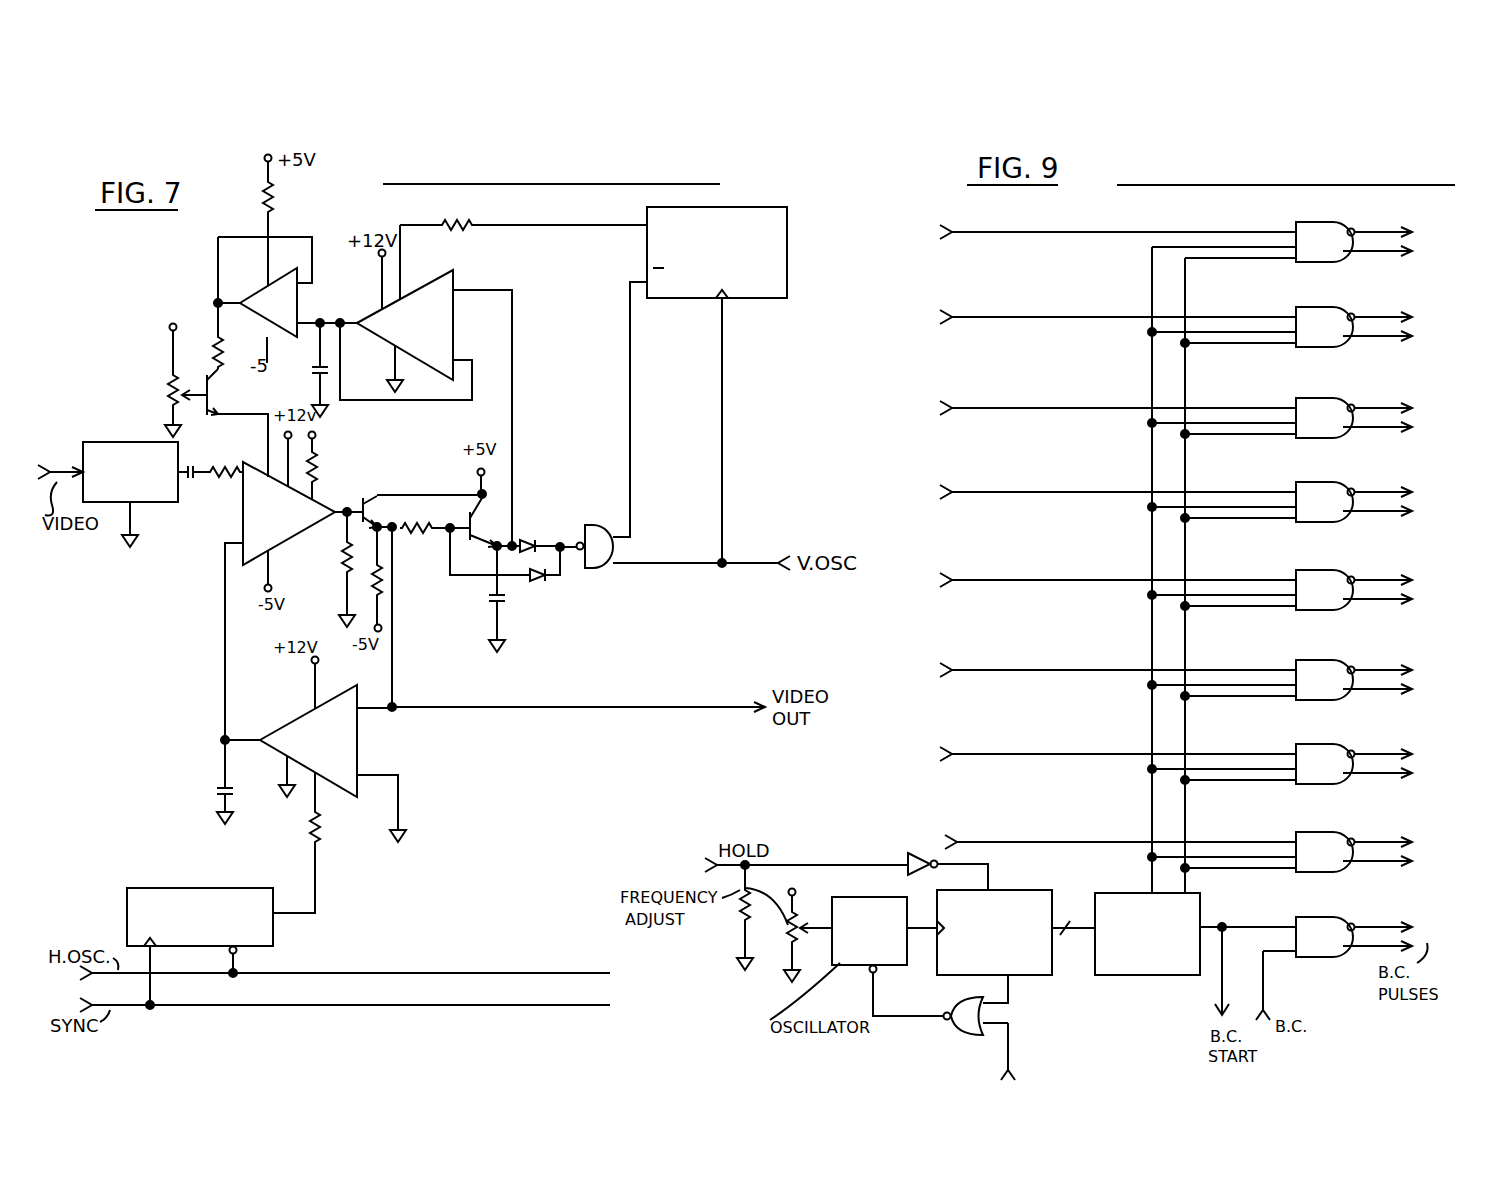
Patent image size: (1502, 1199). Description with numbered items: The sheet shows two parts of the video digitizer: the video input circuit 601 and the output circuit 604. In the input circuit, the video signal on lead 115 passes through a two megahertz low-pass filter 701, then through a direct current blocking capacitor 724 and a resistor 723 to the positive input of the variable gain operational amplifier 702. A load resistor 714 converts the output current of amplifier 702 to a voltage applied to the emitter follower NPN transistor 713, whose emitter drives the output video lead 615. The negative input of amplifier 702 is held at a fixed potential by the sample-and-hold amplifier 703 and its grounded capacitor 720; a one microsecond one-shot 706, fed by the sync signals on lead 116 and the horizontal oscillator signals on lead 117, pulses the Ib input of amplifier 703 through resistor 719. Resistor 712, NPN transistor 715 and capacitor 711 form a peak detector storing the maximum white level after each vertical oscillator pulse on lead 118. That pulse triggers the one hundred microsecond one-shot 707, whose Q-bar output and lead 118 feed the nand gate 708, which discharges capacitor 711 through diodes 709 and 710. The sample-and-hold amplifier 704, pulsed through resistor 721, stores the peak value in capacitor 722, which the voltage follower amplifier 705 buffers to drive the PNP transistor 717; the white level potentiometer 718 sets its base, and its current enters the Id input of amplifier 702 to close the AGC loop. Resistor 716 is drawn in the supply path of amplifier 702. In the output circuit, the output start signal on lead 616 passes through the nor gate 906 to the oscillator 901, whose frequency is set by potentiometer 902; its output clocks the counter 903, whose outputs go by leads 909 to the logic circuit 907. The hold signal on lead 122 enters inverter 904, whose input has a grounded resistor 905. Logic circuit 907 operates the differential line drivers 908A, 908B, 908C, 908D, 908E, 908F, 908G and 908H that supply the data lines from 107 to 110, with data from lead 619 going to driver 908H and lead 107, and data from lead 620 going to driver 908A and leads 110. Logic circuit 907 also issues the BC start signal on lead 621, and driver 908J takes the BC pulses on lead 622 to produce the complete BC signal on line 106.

In FIG. 7, the video input circuit 601 is at (551, 170).
In FIG. 9, the output circuit 604 is at (1287, 171).
In FIG. 7, the low-pass filter 701 is at (125, 442).
In FIG. 7, the operational amplifier 702 is at (260, 513).
In FIG. 7, the operational transconductance amplifier 703 is at (302, 722).
In FIG. 7, the operational amplifier 704 is at (455, 290).
In FIG. 7, the operational amplifier 705 is at (298, 306).
In FIG. 7, the one-shot 706 is at (148, 897).
In FIG. 7, the one-shot 707 is at (748, 225).
In FIG. 7, the nand gate 708 is at (613, 514).
In FIG. 7, the diode 709 is at (540, 582).
In FIG. 7, the diode 710 is at (526, 540).
In FIG. 7, the capacitor 711 is at (490, 602).
In FIG. 7, the resistor 712 is at (427, 540).
In FIG. 7, the NPN transistor 713 is at (362, 500).
In FIG. 7, the resistor 714 is at (340, 576).
In FIG. 7, the NPN transistor 715 is at (478, 522).
In FIG. 7, the resistor 716 is at (316, 466).
In FIG. 7, the PNP transistor 717 is at (205, 388).
In FIG. 7, the potentiometer 718 is at (165, 390).
In FIG. 7, the resistor 719 is at (318, 836).
In FIG. 7, the capacitor 720 is at (218, 797).
In FIG. 7, the resistor 721 is at (455, 223).
In FIG. 7, the capacitor 722 is at (312, 367).
In FIG. 7, the resistor 723 is at (228, 470).
In FIG. 7, the direct current blocking capacitor 724 is at (190, 480).
In FIG. 7, the lead 115 is at (60, 470).
In FIG. 7, the lead 116 is at (490, 1006).
In FIG. 7, the lead 117 is at (440, 973).
In FIG. 7, the lead 118 is at (722, 566).
In FIG. 7, the lead 615 is at (655, 710).
In FIG. 9, the oscillator 901 is at (855, 965).
In FIG. 9, the potentiometer 902 is at (787, 940).
In FIG. 9, the counter 903 is at (1000, 905).
In FIG. 9, the inverter 904 is at (922, 853).
In FIG. 9, the resistor 905 is at (740, 930).
In FIG. 9, the nor gate 906 is at (980, 1035).
In FIG. 9, the logic circuit 907 is at (1170, 973).
In FIG. 9, the differential line driver 908A is at (1306, 240).
In FIG. 9, the differential line driver 908B is at (1306, 325).
In FIG. 9, the differential line driver 908C is at (1306, 416).
In FIG. 9, the differential line driver 908D is at (1306, 500).
In FIG. 9, the differential line driver 908E is at (1306, 588).
In FIG. 9, the differential line driver 908F is at (1306, 678).
In FIG. 9, the differential line driver 908G is at (1306, 762).
In FIG. 9, the differential line driver 908H is at (1306, 850).
In FIG. 9, the differential line driver 908J is at (1306, 935).
In FIG. 9, the leads 909 is at (1062, 920).
In FIG. 9, the line 106 is at (1413, 937).
In FIG. 9, the lead 107 is at (1412, 850).
In FIG. 9, the leads 110 is at (1405, 252).
In FIG. 9, the lead 122 is at (706, 862).
In FIG. 9, the lead 616 is at (1012, 1066).
In FIG. 9, the lead 619 is at (1057, 840).
In FIG. 9, the lead 620 is at (1055, 236).
In FIG. 9, the lead 621 is at (1215, 995).
In FIG. 9, the lead 622 is at (1270, 1002).